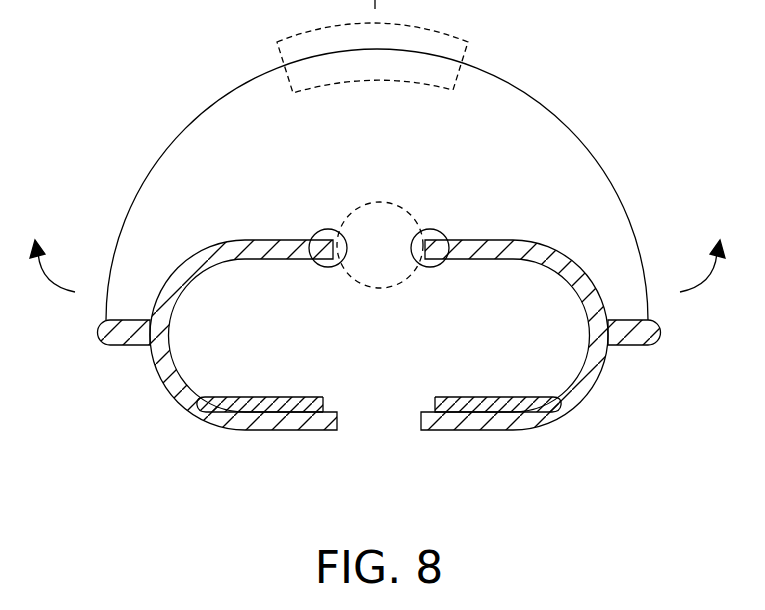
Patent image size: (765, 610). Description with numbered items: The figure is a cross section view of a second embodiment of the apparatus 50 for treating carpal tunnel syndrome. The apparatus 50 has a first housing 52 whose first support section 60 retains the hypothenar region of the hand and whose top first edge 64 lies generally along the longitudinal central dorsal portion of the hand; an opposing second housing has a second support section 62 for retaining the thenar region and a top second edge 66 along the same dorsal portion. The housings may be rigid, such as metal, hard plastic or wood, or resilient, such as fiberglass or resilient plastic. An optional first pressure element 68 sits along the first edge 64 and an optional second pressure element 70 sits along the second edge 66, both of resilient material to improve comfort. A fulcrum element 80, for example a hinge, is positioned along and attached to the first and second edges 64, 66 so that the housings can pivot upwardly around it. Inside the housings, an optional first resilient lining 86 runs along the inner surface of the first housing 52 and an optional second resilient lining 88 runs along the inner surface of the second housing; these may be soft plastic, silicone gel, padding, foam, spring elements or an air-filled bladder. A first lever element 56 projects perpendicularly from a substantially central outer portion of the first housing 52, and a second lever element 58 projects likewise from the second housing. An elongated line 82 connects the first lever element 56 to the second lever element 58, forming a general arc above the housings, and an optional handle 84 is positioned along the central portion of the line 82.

The apparatus 50 is at (452, 430).
The first housing 52 is at (158, 380).
The first lever element 56 is at (120, 346).
The second lever element 58 is at (633, 347).
The first support section 60 is at (277, 397).
The second support section 62 is at (482, 407).
The top first edge 64 is at (333, 263).
The top second edge 66 is at (433, 263).
The first pressure element 68 is at (338, 230).
The second pressure element 70 is at (435, 230).
The fulcrum element 80 is at (392, 202).
The elongated line 82 is at (197, 122).
The handle 84 is at (466, 55).
The first resilient lining 86 is at (325, 404).
The second resilient lining 88 is at (528, 402).